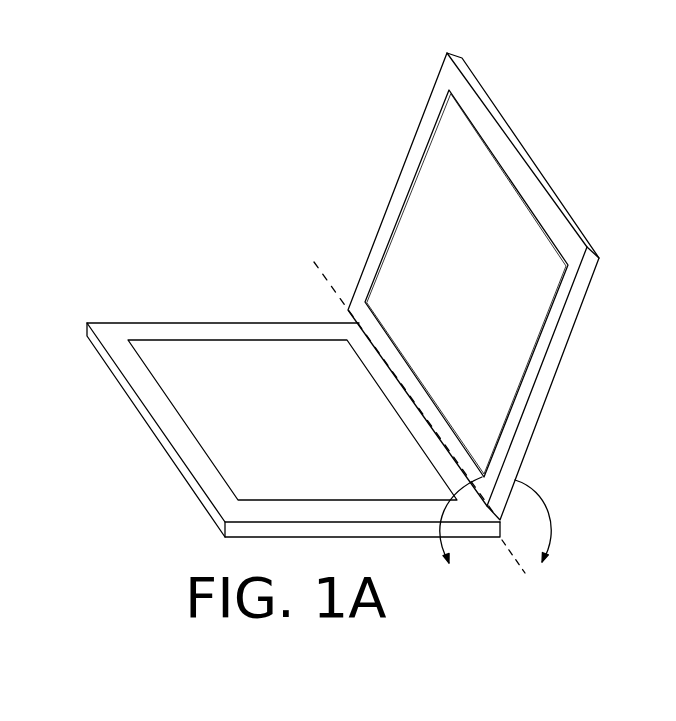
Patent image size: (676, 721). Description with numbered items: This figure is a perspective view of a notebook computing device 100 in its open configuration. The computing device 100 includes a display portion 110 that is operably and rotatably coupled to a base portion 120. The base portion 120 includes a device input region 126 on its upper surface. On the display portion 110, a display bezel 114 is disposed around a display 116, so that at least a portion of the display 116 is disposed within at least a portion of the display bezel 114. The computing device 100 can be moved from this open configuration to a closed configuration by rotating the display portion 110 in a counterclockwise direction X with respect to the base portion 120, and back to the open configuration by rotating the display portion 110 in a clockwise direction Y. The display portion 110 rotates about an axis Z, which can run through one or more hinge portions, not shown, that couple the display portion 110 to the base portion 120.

The computing device 100 is at (305, 114).
The display portion 110 is at (590, 242).
The display bezel 114 is at (446, 85).
The display 116 is at (427, 212).
The base portion 120 is at (215, 330).
The device input region 126 is at (288, 367).